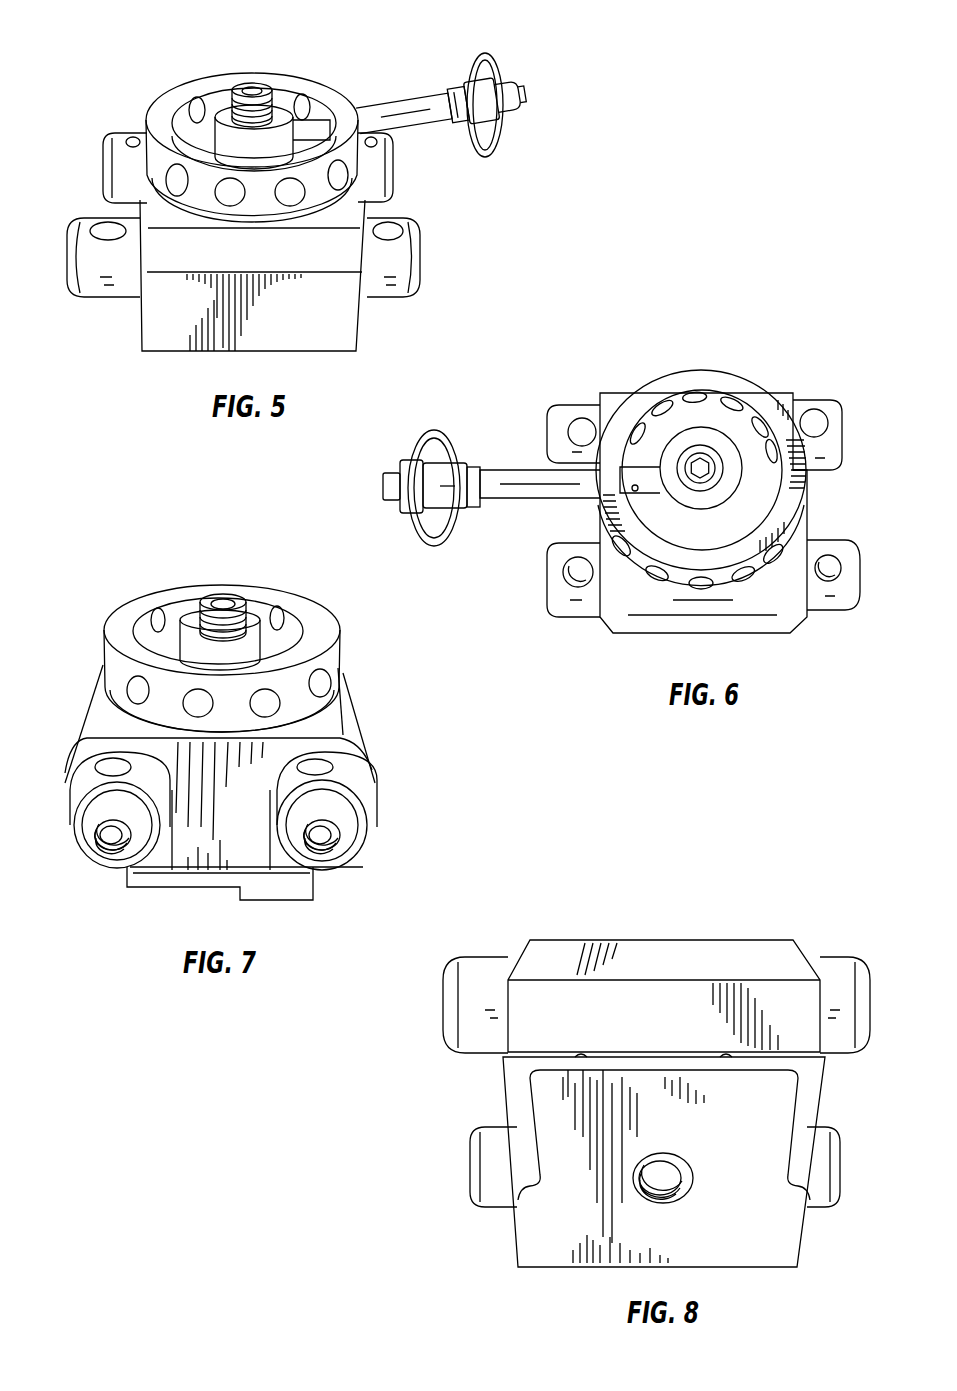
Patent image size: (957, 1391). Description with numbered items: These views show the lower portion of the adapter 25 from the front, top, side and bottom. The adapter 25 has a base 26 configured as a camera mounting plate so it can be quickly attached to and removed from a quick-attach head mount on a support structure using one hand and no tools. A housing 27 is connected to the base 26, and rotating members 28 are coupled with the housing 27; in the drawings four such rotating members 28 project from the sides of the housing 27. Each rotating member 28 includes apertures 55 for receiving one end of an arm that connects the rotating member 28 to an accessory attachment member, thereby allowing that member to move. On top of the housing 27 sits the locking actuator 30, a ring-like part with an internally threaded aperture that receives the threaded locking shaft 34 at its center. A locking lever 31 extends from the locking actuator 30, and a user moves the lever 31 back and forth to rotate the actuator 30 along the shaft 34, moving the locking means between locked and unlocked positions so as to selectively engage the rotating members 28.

In FIG. 5, the adapter 25 is at (135, 80).
In FIG. 6, the adapter 25 is at (780, 346).
In FIG. 7, the adapter 25 is at (73, 630).
In FIG. 8, the adapter 25 is at (810, 915).
In FIG. 8, the base 26 is at (540, 1232).
In FIG. 5, the housing 27 is at (342, 327).
In FIG. 6, the housing 27 is at (784, 614).
In FIG. 7, the housing 27 is at (345, 723).
In FIG. 8, the housing 27 is at (670, 950).
In FIG. 5, the rotating member 28 is at (103, 187).
In FIG. 6, the rotating member 28 is at (550, 557).
In FIG. 7, the rotating member 28 is at (97, 867).
In FIG. 8, the rotating member 28 is at (507, 1130).
In FIG. 5, the locking actuator 30 is at (227, 78).
In FIG. 6, the locking actuator 30 is at (680, 370).
In FIG. 7, the locking actuator 30 is at (320, 620).
In FIG. 5, the locking lever 31 is at (393, 100).
In FIG. 6, the locking lever 31 is at (502, 470).
In FIG. 5, the threaded locking shaft 34 is at (253, 90).
In FIG. 6, the threaded locking shaft 34 is at (702, 445).
In FIG. 7, the threaded locking shaft 34 is at (223, 602).
In FIG. 6, the aperture 55 is at (835, 567).
In FIG. 7, the aperture 55 is at (110, 766).